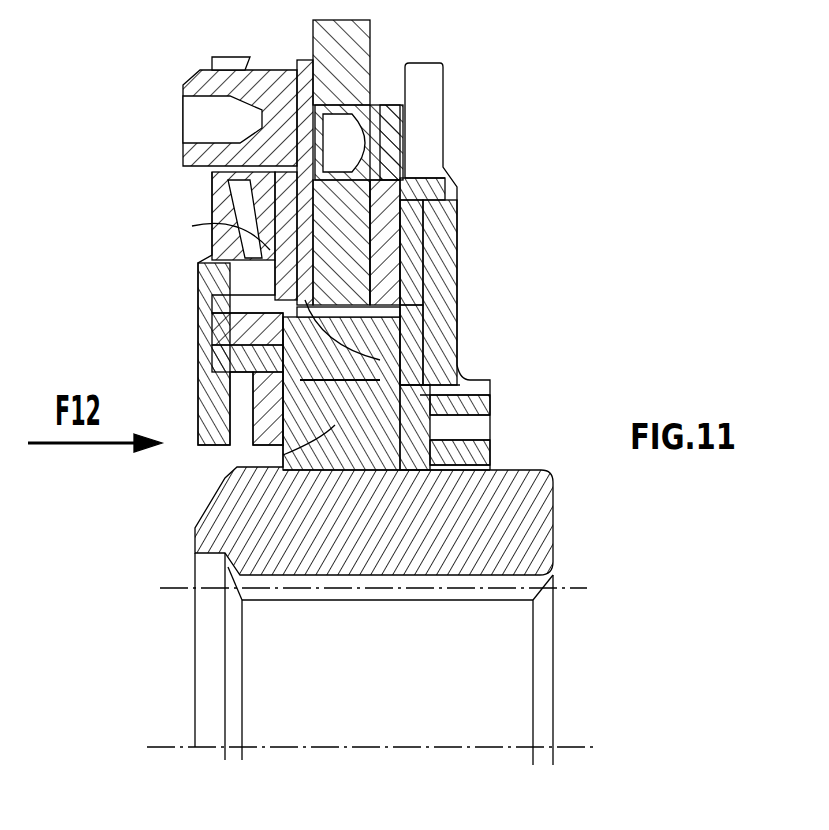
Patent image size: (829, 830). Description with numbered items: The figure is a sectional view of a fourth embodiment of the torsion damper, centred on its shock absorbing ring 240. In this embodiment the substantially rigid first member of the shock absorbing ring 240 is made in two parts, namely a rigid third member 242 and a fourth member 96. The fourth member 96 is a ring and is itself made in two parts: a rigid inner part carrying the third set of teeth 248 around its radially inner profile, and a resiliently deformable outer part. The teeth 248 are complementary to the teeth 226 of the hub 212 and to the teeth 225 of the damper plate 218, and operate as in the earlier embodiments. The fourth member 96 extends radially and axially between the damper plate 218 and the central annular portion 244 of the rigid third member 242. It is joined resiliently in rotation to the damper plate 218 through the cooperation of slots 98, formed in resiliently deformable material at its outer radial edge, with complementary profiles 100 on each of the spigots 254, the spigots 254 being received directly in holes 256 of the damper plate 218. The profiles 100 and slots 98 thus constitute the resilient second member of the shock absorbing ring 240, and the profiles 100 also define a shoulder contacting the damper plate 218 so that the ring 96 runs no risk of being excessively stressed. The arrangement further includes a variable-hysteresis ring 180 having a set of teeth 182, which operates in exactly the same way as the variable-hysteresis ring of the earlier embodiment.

The fourth member 96 is at (440, 262).
The slots 98 is at (425, 250).
The complementary profiles 100 is at (212, 262).
The variable-hysteresis ring 180 is at (200, 162).
The set of teeth 182 is at (290, 332).
The hub 212 is at (295, 535).
The damper plate 218 is at (250, 228).
The teeth 225 is at (292, 473).
The teeth 226 is at (285, 372).
The shock absorbing ring 240 is at (420, 125).
The rigid third member 242 is at (395, 190).
The central annular portion 244 is at (410, 300).
The third set of teeth 248 is at (460, 397).
The spigots 254 is at (386, 105).
The holes 256 is at (290, 100).